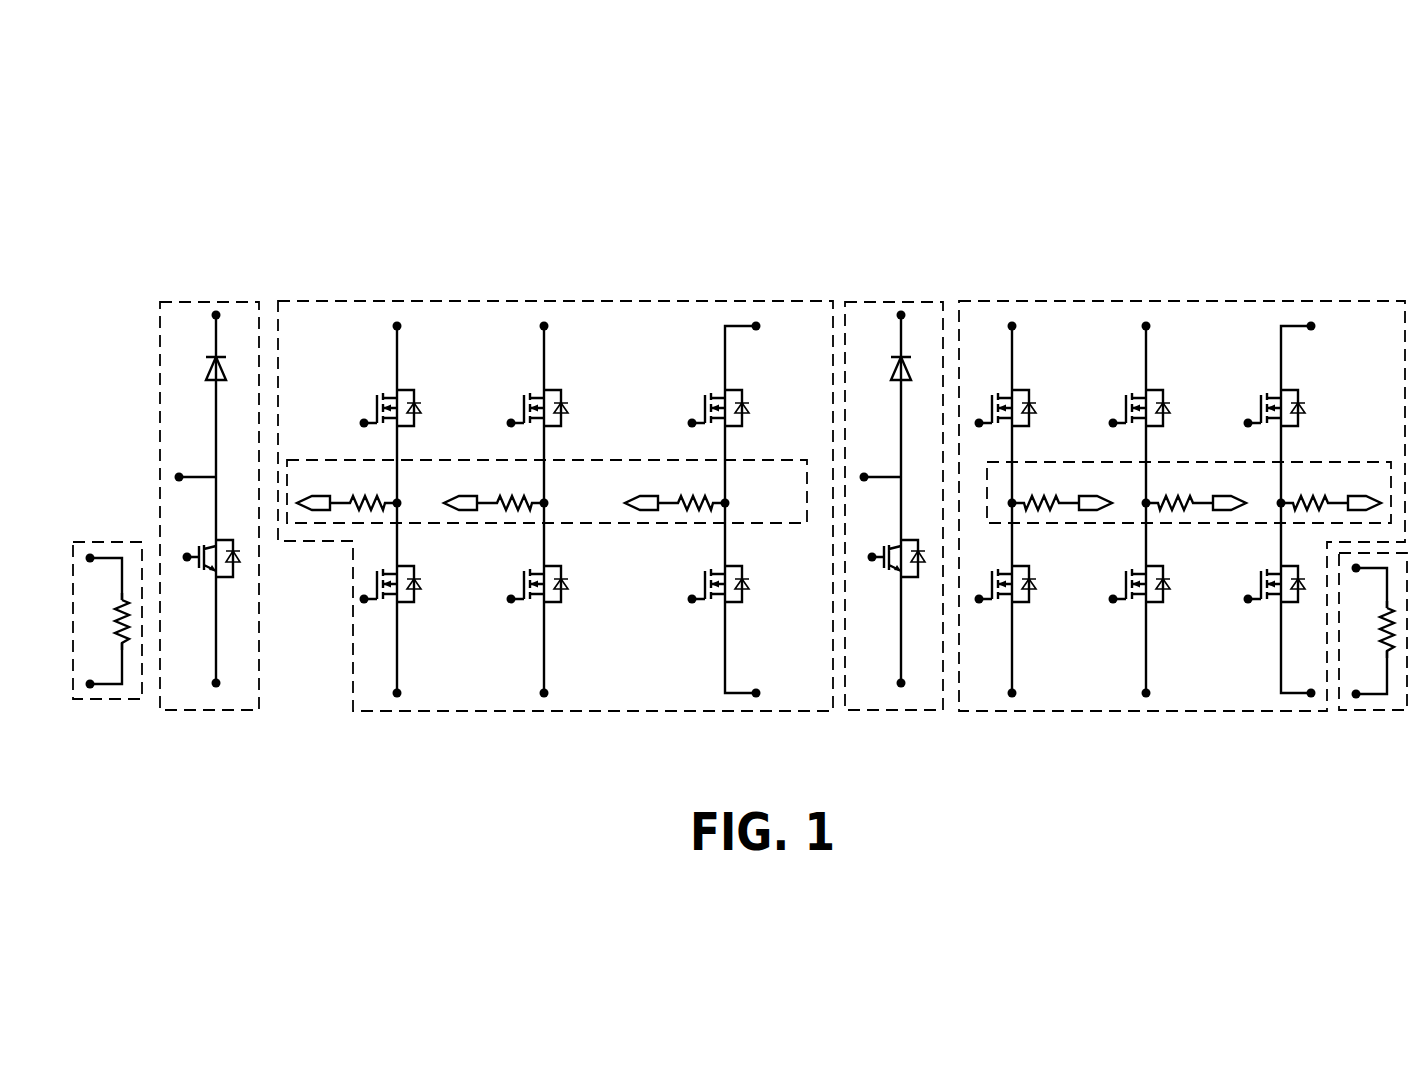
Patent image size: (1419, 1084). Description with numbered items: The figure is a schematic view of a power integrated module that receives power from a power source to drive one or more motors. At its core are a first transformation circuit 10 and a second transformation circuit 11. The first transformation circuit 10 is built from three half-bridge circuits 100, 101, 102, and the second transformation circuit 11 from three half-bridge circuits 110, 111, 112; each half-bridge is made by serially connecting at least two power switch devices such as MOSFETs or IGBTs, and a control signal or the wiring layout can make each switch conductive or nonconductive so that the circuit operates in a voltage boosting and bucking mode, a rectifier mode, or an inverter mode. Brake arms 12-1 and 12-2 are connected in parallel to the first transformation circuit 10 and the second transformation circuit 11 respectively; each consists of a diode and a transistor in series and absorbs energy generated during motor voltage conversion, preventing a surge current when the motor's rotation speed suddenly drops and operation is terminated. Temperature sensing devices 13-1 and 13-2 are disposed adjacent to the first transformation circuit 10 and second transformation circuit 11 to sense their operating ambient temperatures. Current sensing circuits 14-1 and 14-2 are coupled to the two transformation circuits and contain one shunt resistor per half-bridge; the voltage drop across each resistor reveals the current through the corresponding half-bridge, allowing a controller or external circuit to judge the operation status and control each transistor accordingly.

The first transformation circuit 10 is at (456, 300).
The second transformation circuit 11 is at (1358, 300).
The brake arm 12-1 is at (217, 300).
The brake arm 12-2 is at (903, 300).
The temperature sensing device 13-1 is at (98, 540).
The temperature sensing device 13-2 is at (1358, 712).
The current sensing circuit 14-1 is at (320, 527).
The current sensing circuit 14-2 is at (1352, 460).
The half-bridge circuit 100 is at (384, 318).
The half-bridge circuit 101 is at (531, 318).
The half-bridge circuit 102 is at (711, 318).
The half-bridge circuit 110 is at (999, 318).
The half-bridge circuit 111 is at (1134, 318).
The half-bridge circuit 112 is at (1264, 318).